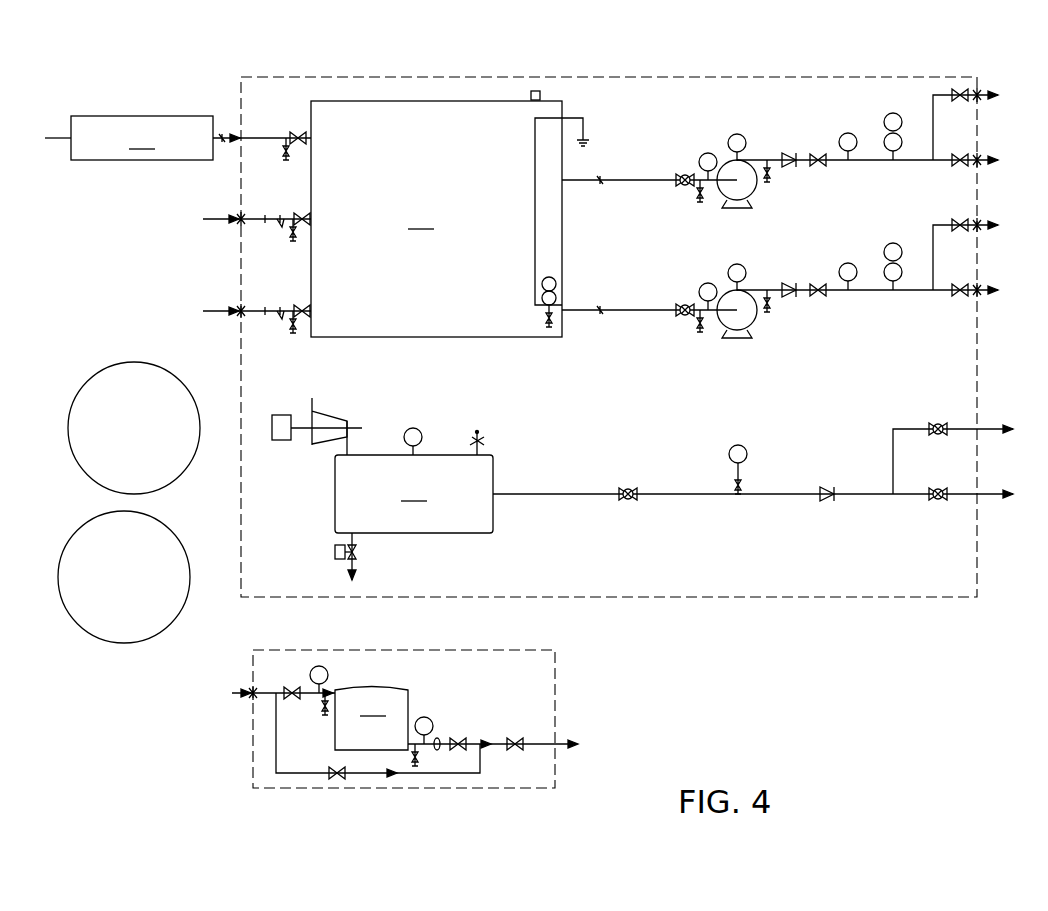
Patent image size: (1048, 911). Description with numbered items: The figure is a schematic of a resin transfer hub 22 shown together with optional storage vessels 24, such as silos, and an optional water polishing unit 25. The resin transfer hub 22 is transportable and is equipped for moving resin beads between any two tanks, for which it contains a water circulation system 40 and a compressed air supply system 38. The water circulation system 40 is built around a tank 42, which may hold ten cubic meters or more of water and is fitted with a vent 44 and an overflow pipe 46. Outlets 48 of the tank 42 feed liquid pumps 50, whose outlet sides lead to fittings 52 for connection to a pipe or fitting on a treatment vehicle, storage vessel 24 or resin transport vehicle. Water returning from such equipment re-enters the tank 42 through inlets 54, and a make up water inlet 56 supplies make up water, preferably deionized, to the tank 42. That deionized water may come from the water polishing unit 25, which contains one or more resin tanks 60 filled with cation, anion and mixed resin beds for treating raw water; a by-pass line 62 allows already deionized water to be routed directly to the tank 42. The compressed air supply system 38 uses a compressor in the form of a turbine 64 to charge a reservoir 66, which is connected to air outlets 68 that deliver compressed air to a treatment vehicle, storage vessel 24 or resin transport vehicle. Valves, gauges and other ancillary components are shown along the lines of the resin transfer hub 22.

The resin transfer hub 22 is at (610, 599).
The storage vessel 24 is at (72, 454).
The water polishing unit 25 is at (253, 774).
The compressed air supply system 38 is at (645, 441).
The water circulation system 40 is at (528, 353).
The tank 42 is at (436, 219).
The vent 44 is at (541, 95).
The overflow pipe 46 is at (589, 135).
The outlet 48 is at (616, 185).
The liquid pump 50 is at (752, 196).
The fitting 52 is at (984, 100).
The inlet 54 is at (248, 226).
The make up water inlet 56 is at (258, 144).
The resin tank 60 is at (456, 727).
The by-pass line 62 is at (435, 775).
The turbine 64 is at (328, 412).
The reservoir 66 is at (414, 504).
The air outlet 68 is at (984, 434).